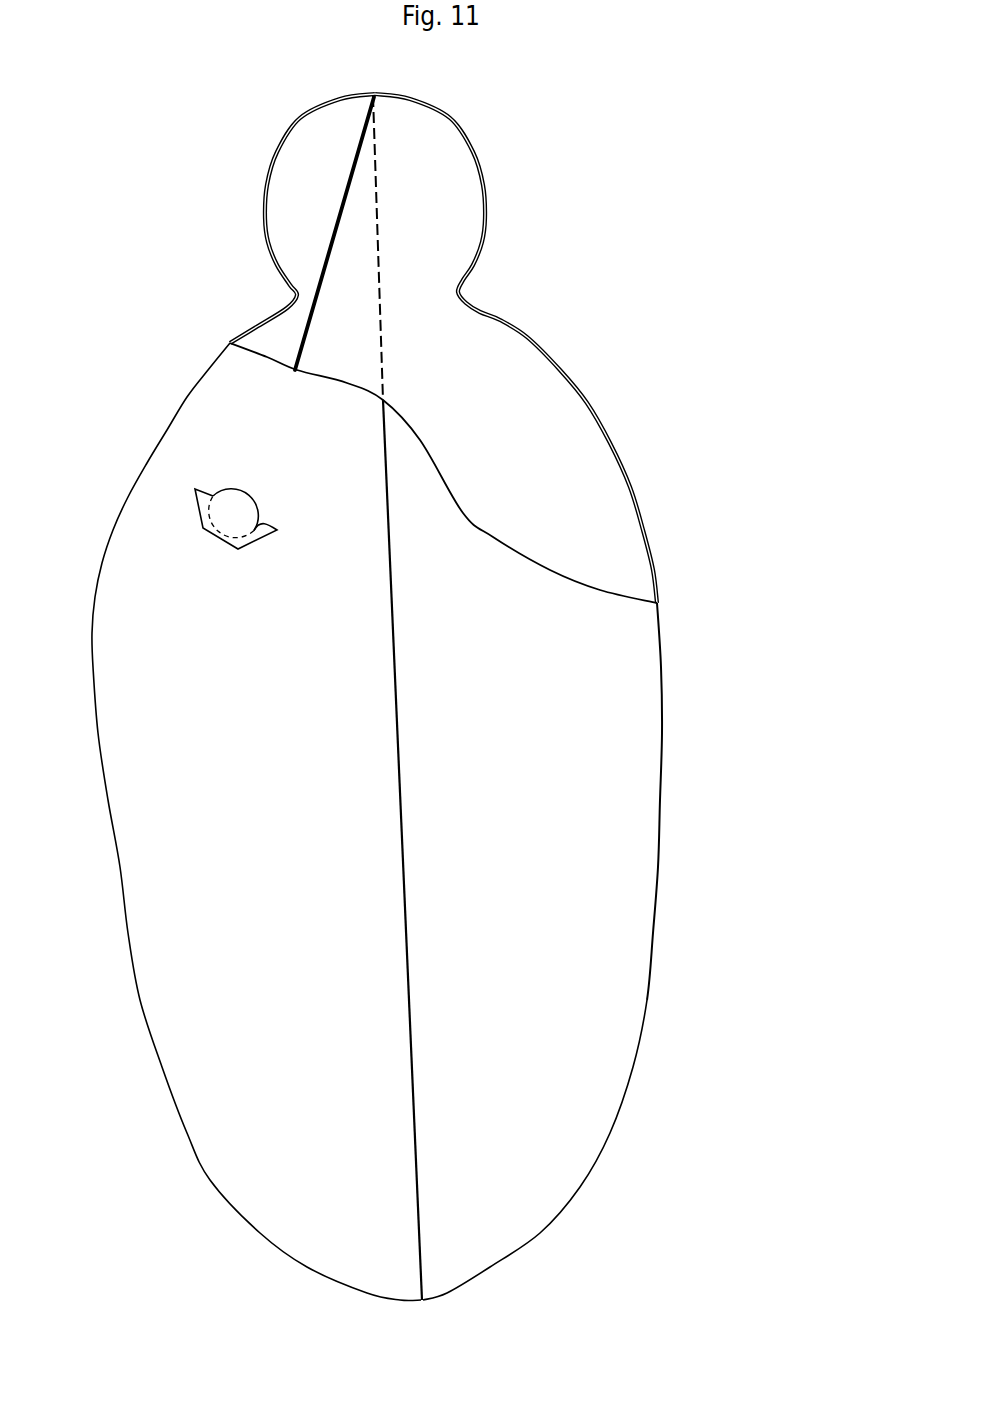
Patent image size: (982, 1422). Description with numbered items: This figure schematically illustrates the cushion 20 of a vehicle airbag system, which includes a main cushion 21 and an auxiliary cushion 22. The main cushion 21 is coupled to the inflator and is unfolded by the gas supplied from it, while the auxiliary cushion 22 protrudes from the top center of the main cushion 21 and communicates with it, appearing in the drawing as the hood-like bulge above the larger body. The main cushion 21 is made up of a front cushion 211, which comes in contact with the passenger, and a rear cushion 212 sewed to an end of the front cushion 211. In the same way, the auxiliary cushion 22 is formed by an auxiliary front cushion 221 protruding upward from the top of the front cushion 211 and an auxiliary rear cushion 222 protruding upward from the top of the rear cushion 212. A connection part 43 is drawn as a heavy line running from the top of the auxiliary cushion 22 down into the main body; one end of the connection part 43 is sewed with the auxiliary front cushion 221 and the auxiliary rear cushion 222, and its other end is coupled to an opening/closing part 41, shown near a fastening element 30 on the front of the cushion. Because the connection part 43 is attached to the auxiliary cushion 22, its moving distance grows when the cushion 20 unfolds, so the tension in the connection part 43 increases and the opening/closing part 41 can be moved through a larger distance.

The cushion 20 is at (431, 697).
The main cushion 21 is at (400, 789).
The auxiliary cushion 22 is at (471, 348).
The front cushion 211 is at (463, 557).
The rear cushion 212 is at (320, 448).
The auxiliary front cushion 221 is at (487, 203).
The auxiliary rear cushion 222 is at (288, 143).
The fastening button 30 is at (220, 520).
The opening/closing part 41 is at (193, 505).
The connection part 43 is at (325, 260).